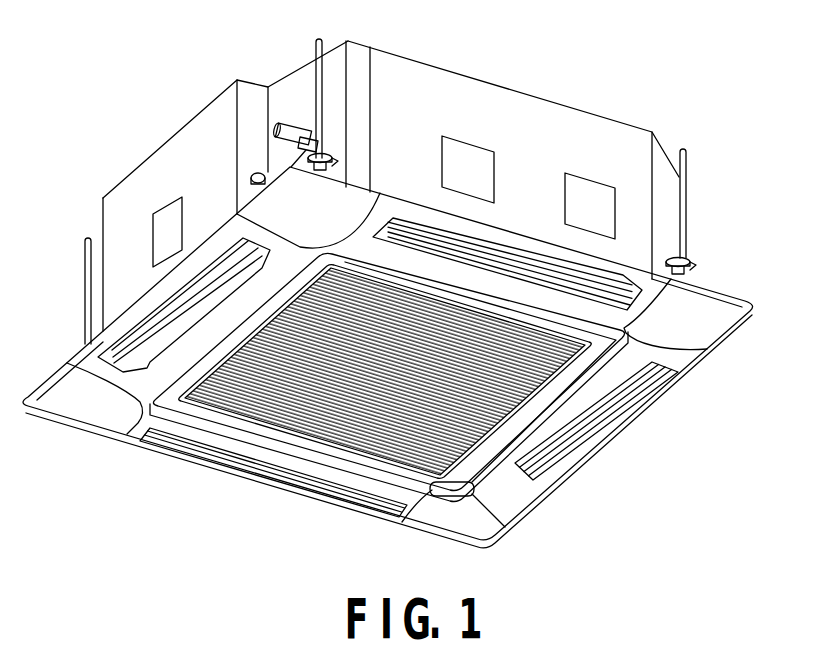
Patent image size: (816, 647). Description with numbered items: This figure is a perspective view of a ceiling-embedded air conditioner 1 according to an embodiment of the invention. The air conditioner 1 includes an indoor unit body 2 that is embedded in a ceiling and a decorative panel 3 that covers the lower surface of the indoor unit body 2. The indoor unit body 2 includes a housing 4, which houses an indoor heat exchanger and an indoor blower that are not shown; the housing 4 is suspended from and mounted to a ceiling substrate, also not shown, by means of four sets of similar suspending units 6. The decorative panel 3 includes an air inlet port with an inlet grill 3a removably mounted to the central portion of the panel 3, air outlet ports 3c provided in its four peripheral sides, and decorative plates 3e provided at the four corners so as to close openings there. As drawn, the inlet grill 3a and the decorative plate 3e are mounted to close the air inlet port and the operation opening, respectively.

The ceiling-embedded air conditioner 1 is at (205, 80).
The indoor unit body 2 is at (154, 140).
The decorative panel 3 is at (568, 485).
The inlet grill 3a is at (247, 365).
The air outlet ports 3c is at (604, 440).
The decorative plate 3e is at (697, 334).
The housing 4 is at (503, 82).
The suspending unit 6 is at (696, 228).